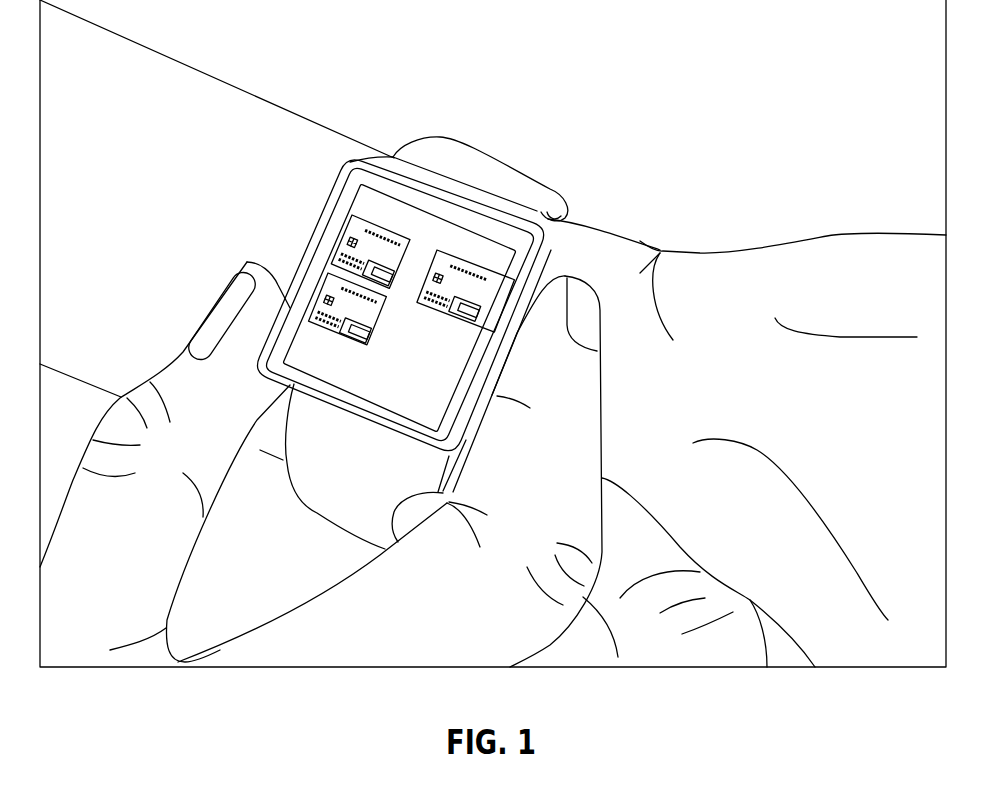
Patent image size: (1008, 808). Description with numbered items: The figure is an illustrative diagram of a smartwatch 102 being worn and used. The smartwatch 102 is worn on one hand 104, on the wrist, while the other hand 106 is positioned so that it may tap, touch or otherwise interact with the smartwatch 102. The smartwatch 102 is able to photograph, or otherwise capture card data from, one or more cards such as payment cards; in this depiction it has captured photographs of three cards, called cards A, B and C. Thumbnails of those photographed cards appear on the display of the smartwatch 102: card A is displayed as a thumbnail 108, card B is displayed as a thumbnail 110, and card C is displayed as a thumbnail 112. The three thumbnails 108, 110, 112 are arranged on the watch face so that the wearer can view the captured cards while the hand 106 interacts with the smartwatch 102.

The smartwatch 102 is at (537, 182).
The hand 104 is at (696, 253).
The hand 106 is at (602, 412).
The thumbnail of card A 108 is at (402, 234).
The thumbnail of card B 110 is at (440, 256).
The thumbnail of card C 112 is at (367, 333).